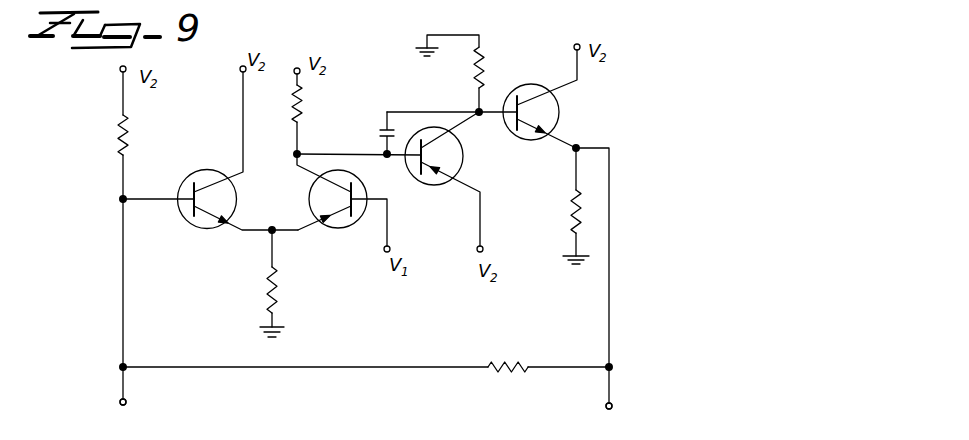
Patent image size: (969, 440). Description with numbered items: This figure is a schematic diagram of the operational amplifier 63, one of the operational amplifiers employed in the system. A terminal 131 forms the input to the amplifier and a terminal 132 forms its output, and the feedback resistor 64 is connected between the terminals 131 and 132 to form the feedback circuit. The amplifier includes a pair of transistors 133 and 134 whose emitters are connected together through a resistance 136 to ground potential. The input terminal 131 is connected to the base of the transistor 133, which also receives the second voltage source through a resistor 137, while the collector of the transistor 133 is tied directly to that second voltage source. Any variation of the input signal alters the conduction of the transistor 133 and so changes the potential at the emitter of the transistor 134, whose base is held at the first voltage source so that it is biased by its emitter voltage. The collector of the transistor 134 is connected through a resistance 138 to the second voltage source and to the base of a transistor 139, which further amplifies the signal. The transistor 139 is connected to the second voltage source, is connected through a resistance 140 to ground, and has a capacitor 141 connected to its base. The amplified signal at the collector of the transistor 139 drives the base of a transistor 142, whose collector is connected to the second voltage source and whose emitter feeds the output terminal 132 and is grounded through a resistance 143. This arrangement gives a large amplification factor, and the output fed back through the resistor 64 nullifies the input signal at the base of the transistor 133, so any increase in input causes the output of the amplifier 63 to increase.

The operational amplifier 63 is at (627, 144).
The feedback resistor 64 is at (517, 363).
The input terminal 131 is at (127, 402).
The output terminal 132 is at (614, 404).
The transistor 133 is at (200, 169).
The transistor 134 is at (345, 228).
The resistance 136 is at (282, 288).
The resistor 137 is at (118, 125).
The resistance 138 is at (303, 106).
The transistor 139 is at (463, 154).
The resistance 140 is at (483, 68).
The capacitor 141 is at (385, 130).
The transistor 142 is at (562, 115).
The resistance 143 is at (570, 213).